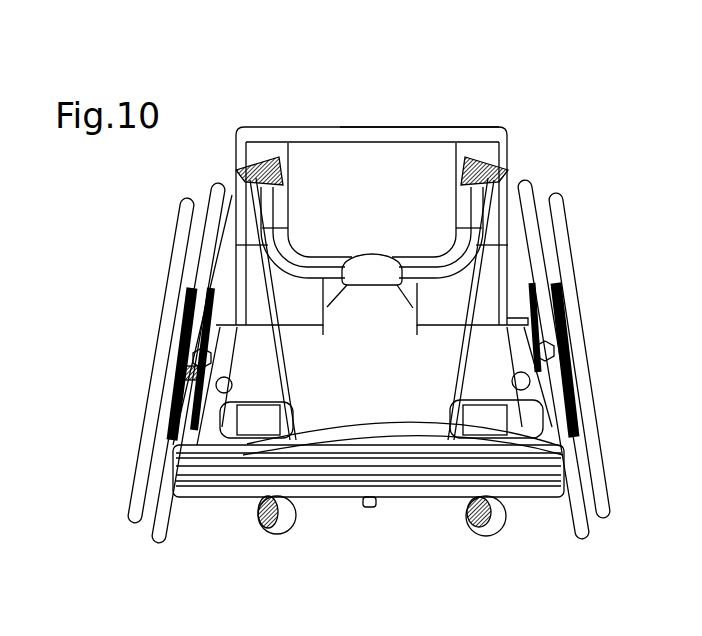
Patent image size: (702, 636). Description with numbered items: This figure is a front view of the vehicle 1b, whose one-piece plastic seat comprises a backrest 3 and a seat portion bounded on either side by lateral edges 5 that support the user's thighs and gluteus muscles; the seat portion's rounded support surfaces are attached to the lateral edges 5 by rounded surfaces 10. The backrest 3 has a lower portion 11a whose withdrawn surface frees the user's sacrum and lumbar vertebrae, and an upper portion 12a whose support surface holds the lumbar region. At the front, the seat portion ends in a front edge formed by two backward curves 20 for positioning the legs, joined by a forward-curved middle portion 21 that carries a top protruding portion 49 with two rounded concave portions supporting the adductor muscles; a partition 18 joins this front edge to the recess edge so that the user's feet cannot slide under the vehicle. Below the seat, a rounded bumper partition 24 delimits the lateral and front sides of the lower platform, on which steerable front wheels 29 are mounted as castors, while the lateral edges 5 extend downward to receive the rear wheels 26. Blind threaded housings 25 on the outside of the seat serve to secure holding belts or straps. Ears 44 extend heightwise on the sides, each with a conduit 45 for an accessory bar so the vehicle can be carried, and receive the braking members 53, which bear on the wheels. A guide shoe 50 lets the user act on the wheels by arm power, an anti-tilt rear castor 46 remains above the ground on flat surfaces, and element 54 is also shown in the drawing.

The vehicle 1b is at (553, 103).
The backrest 3 is at (319, 172).
The lateral edges 5 is at (243, 178).
The rounded surfaces 10 is at (283, 142).
The lower portion of the backrest 11a is at (366, 241).
The upper portion of the backrest 12a is at (434, 127).
The partition 18 is at (393, 367).
The backward curves 20 is at (447, 290).
The middle portion 21 is at (372, 288).
The bumper partition 24 is at (402, 440).
The blind threaded housings 25 is at (262, 275).
The rear wheels 26 is at (527, 191).
The steerable front wheel 29 is at (275, 539).
The ears 44 is at (530, 402).
The conduit for an accessory 45 is at (532, 384).
The anti-tilt rear castor 46 is at (367, 507).
The top protruding portion 49 is at (374, 252).
The guide shoe 50 is at (172, 279).
The braking members 53 is at (163, 360).
The bolt 54 is at (167, 427).